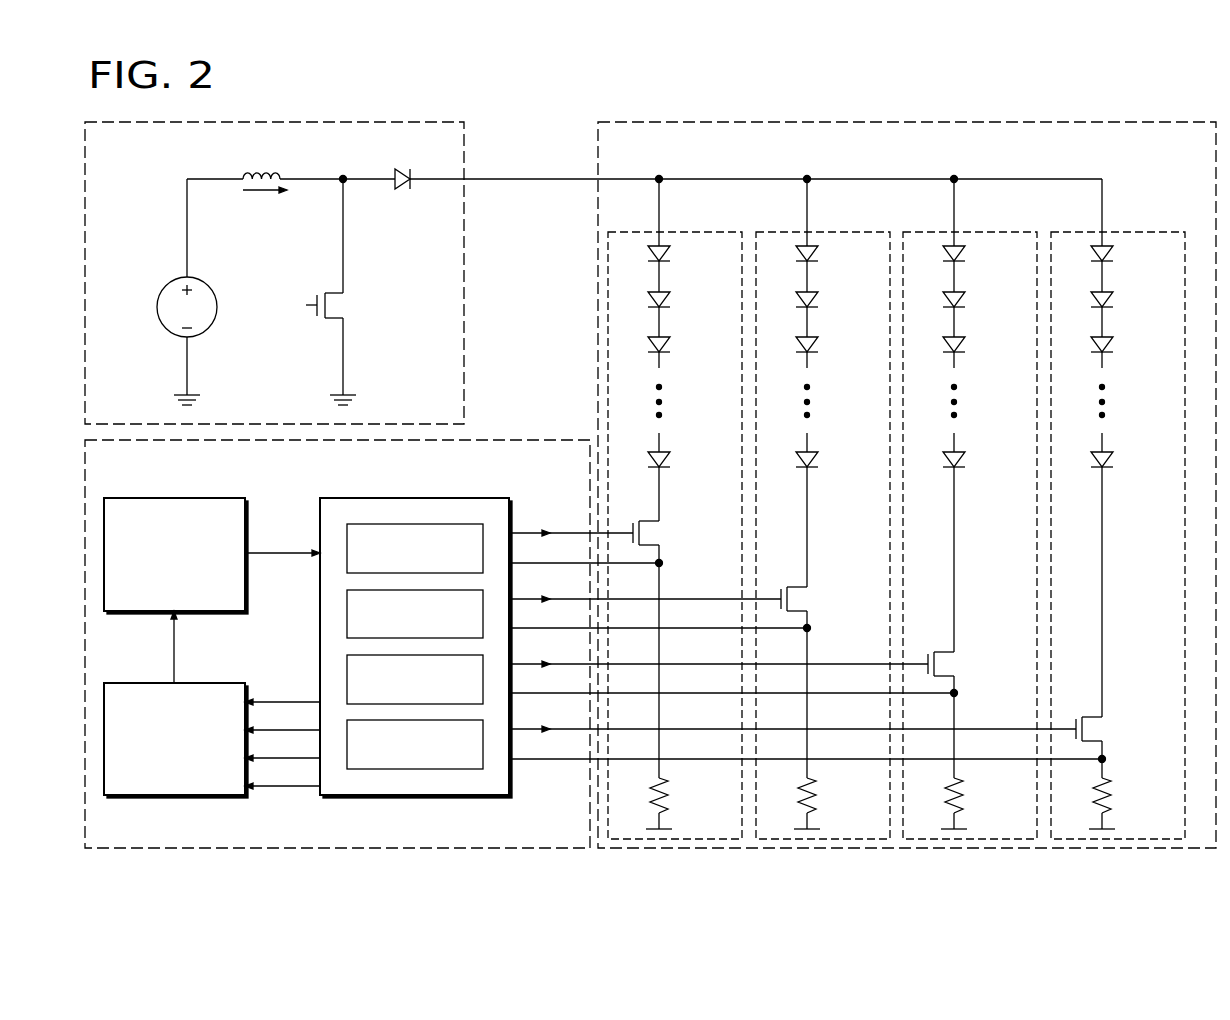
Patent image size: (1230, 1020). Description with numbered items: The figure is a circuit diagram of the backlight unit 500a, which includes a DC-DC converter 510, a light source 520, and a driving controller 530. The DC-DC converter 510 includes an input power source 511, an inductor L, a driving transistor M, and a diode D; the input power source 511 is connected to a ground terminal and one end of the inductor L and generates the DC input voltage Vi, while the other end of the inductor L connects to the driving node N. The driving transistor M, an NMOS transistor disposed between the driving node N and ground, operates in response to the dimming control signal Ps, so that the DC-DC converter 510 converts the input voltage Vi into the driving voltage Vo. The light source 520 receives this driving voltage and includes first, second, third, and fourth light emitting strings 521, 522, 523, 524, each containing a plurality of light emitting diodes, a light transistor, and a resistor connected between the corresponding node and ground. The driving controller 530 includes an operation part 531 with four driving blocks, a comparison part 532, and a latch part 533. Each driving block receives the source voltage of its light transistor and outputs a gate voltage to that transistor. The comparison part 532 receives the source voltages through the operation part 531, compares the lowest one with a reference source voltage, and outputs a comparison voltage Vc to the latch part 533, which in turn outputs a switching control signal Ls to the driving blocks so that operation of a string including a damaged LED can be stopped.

The backlight unit 500a is at (1190, 92).
The DC-DC converter 510 is at (464, 346).
The input power source 511 is at (207, 286).
The light source 520 is at (598, 250).
The first light emitting string 521 is at (718, 232).
The second light emitting string 522 is at (866, 232).
The third light emitting string 523 is at (1013, 232).
The fourth light emitting string 524 is at (1161, 232).
The driving controller 530 is at (535, 440).
The operation part 531 is at (466, 498).
The comparison part 532 is at (216, 683).
The latch part 533 is at (201, 498).